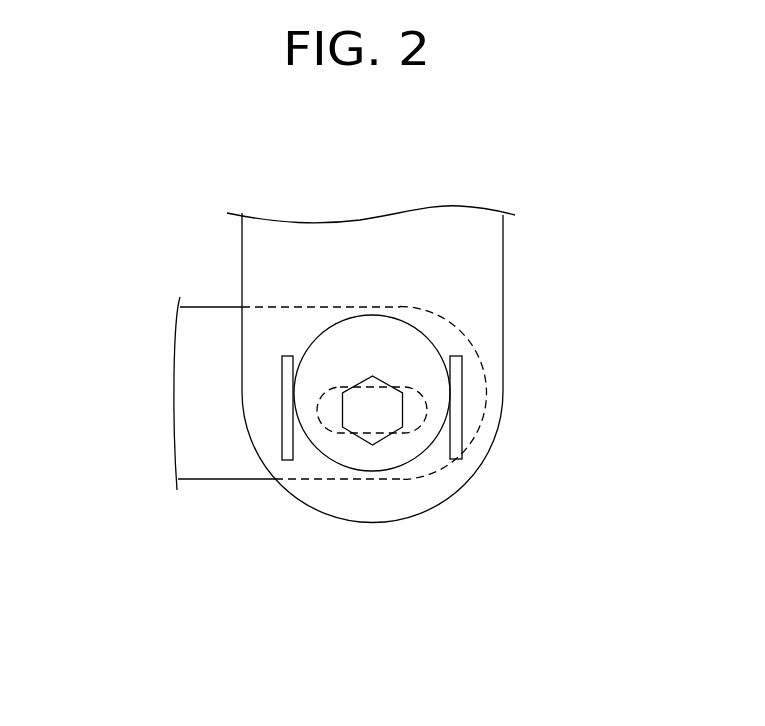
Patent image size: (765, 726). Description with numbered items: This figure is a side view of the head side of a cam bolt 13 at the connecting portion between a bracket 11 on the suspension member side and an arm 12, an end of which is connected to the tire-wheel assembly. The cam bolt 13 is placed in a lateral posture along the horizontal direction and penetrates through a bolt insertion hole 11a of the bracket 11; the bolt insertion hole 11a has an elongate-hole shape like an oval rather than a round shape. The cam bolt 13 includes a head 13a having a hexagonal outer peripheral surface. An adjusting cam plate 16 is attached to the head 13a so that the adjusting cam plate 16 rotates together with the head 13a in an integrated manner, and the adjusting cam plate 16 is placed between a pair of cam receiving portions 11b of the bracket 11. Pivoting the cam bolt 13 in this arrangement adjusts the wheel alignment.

The bracket 11 is at (400, 210).
The bolt insertion hole 11a is at (413, 435).
The cam receiving portions 11b is at (282, 425).
The arm 12 is at (174, 365).
The cam bolt 13 is at (364, 377).
The head 13a is at (362, 428).
The adjusting cam plate 16 is at (410, 348).